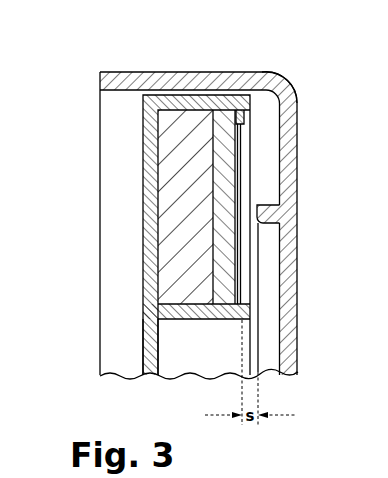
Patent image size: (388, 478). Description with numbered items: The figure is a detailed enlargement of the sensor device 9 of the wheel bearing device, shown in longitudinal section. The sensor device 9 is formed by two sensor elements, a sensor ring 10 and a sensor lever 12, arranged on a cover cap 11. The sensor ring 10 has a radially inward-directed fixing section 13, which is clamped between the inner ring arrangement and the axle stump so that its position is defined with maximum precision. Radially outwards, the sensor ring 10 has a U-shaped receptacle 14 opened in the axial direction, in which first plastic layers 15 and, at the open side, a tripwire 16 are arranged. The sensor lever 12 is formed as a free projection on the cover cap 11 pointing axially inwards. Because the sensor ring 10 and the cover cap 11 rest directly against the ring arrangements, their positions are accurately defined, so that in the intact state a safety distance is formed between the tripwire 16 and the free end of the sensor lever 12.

The sensor device 9 is at (292, 70).
The sensor ring 10 is at (136, 183).
The cover cap 11 is at (291, 103).
The sensor lever 12 is at (264, 230).
The fixing section 13 is at (143, 352).
The U-shaped receptacle 14 is at (244, 127).
The plastic layers 15 is at (145, 223).
The tripwire 16 is at (240, 150).